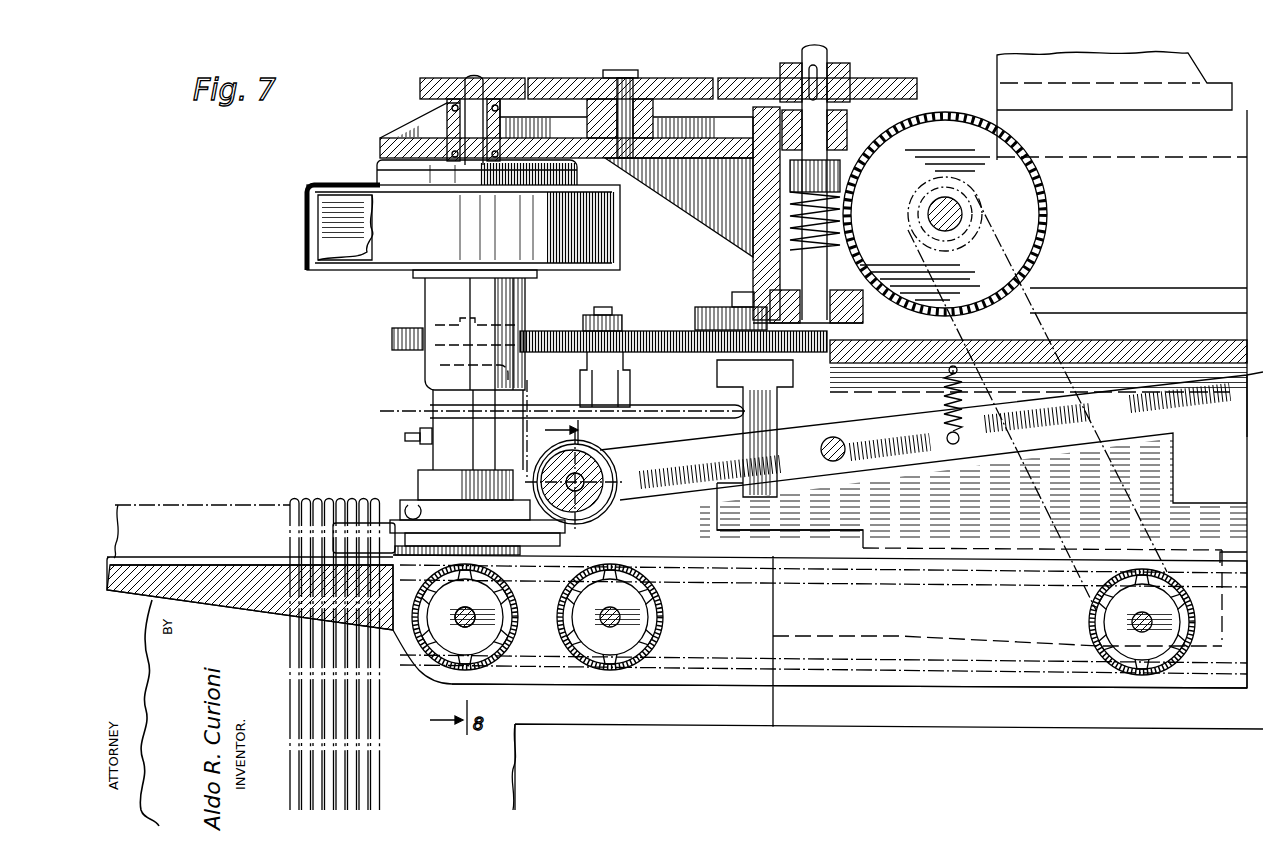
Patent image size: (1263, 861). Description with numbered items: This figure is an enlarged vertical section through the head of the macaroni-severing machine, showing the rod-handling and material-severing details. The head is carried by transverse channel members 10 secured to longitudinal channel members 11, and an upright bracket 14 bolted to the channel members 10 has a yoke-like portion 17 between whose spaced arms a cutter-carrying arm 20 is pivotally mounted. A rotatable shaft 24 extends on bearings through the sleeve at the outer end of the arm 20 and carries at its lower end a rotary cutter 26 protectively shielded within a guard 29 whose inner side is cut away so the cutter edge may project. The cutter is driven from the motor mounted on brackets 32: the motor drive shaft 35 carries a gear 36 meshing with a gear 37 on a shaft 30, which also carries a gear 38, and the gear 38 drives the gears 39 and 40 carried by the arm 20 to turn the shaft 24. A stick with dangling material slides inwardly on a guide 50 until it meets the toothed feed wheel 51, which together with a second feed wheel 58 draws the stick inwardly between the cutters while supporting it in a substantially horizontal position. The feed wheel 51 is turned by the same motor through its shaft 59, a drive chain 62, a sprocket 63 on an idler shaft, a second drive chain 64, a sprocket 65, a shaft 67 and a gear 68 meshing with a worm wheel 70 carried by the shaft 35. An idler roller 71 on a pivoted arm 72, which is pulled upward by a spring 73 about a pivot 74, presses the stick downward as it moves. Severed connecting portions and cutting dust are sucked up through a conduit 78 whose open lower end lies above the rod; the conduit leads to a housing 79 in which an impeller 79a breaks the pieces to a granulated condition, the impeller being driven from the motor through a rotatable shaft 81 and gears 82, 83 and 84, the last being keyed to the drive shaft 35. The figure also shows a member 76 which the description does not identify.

The transverse channel members 10 is at (882, 728).
The longitudinal angle or channel members 11 is at (616, 727).
The upright bracket 14 is at (792, 532).
The yoke-like portion 17 is at (717, 373).
The cutter-carrying arm 20 is at (660, 405).
The rotatable shaft 24 is at (466, 325).
The rotary knife or cutter 26 is at (524, 556).
The guard 29 is at (403, 502).
The shaft 30 is at (744, 292).
The brackets 32 is at (1182, 70).
The shaft 35 is at (827, 56).
The gear 36 is at (860, 330).
The gear 37 is at (712, 307).
The gear 38 is at (682, 331).
The gear 39 is at (632, 331).
The gear 40 is at (392, 336).
The guide 50 is at (190, 560).
The feed wheel 51 is at (418, 648).
The second sprocket or feed wheel 58 is at (665, 612).
The shaft 59 is at (462, 622).
The drive chain 62 is at (746, 685).
The sprocket 63 is at (1143, 670).
The drive chain 64 is at (1117, 470).
The sprocket 65 is at (972, 196).
The shaft 67 is at (968, 230).
The gear 68 is at (1047, 207).
The worm wheel 70 is at (850, 190).
The idler roller 71 is at (598, 452).
The pivoted arm 72 is at (918, 460).
The spring 73 is at (944, 396).
The pivot 74 is at (840, 437).
The flywheel 76 is at (463, 215).
The conduit 78 is at (425, 295).
The housing 79 is at (307, 226).
The impeller or fan wheel 79a is at (327, 240).
The rotatable shaft 81 is at (470, 78).
The gear 82 is at (505, 78).
The gear 83 is at (560, 78).
The gear 84 is at (740, 78).